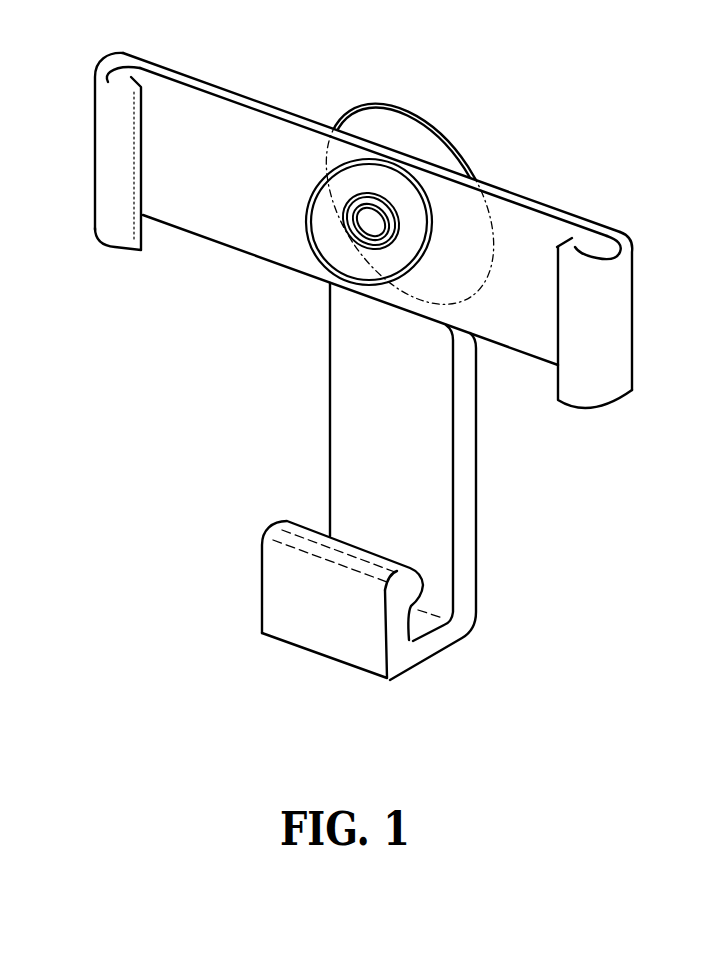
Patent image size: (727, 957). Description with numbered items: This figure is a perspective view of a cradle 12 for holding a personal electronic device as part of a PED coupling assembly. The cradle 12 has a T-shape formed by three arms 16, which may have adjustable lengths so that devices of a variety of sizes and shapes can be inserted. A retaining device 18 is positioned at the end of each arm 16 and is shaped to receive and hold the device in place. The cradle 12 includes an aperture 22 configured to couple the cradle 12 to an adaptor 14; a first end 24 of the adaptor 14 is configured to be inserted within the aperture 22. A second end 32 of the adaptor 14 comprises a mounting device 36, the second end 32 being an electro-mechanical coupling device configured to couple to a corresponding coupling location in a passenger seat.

The cradle 12 is at (343, 358).
The adaptor 14 is at (441, 142).
The arm 16 is at (192, 210).
The retaining device 18 is at (113, 133).
The aperture 22 is at (373, 178).
The first end 24 is at (338, 193).
The second end 32 is at (405, 105).
The mounting device 36 is at (363, 108).